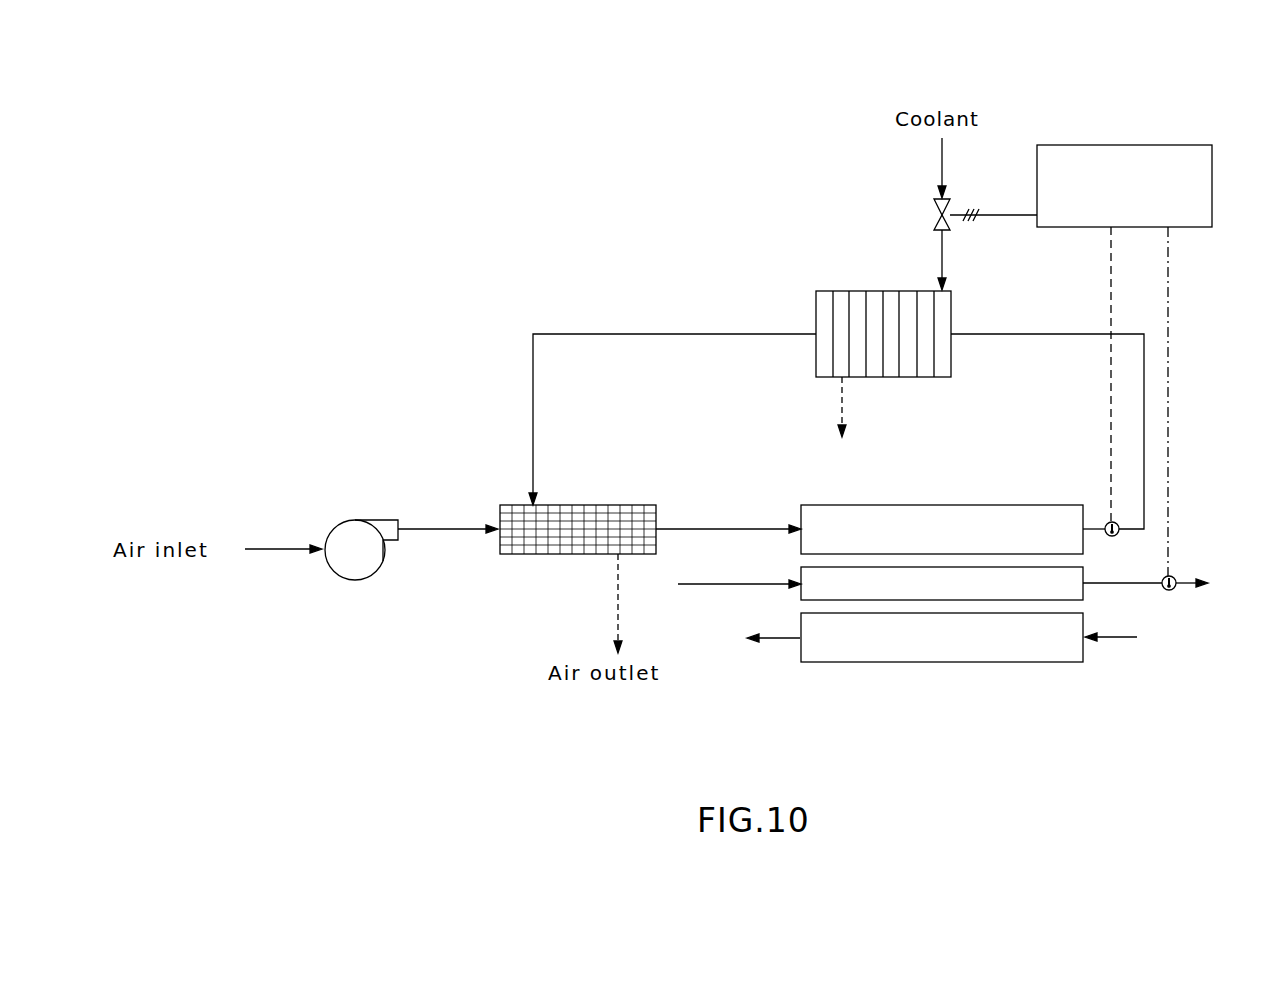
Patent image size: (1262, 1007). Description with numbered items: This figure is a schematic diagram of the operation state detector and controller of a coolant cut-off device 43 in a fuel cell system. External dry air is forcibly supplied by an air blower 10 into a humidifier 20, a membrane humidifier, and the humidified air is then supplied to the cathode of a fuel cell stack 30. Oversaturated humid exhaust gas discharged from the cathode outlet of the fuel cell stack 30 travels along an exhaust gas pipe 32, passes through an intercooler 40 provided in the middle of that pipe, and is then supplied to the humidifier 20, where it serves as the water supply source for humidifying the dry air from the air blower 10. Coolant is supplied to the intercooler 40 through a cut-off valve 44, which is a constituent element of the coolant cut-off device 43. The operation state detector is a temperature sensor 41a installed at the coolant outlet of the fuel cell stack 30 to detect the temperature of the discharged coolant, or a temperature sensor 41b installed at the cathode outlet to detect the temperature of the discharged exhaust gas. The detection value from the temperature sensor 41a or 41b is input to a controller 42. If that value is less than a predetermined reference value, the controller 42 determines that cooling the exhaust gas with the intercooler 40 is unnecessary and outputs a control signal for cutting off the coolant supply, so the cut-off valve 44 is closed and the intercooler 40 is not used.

The air blower 10 is at (353, 580).
The humidifier 20 is at (527, 554).
The fuel cell stack 30 is at (790, 673).
The exhaust gas pipe 32 is at (1030, 334).
The intercooler 40 is at (838, 291).
The temperature sensor 41a is at (1170, 592).
The temperature sensor 41b is at (1117, 521).
The controller 42 is at (1190, 228).
The coolant cut-off device 43 is at (1104, 131).
The cut-off valve 44 is at (936, 201).